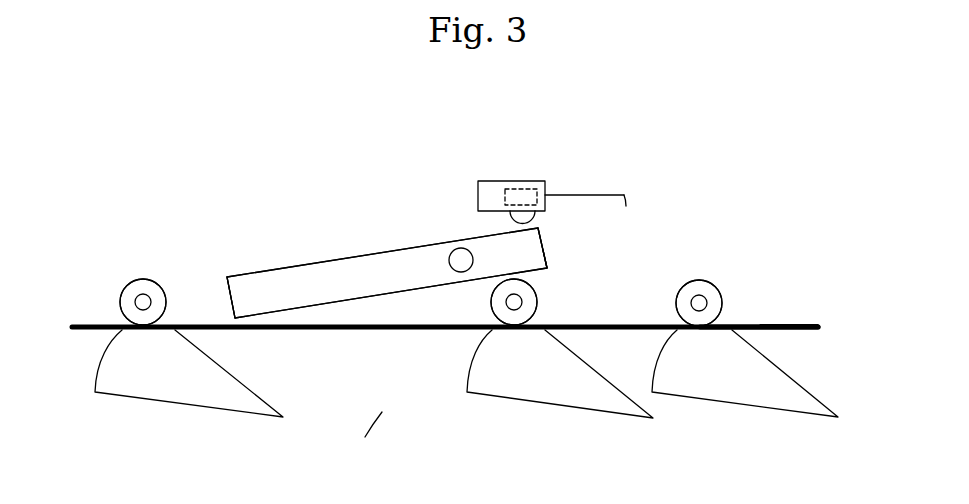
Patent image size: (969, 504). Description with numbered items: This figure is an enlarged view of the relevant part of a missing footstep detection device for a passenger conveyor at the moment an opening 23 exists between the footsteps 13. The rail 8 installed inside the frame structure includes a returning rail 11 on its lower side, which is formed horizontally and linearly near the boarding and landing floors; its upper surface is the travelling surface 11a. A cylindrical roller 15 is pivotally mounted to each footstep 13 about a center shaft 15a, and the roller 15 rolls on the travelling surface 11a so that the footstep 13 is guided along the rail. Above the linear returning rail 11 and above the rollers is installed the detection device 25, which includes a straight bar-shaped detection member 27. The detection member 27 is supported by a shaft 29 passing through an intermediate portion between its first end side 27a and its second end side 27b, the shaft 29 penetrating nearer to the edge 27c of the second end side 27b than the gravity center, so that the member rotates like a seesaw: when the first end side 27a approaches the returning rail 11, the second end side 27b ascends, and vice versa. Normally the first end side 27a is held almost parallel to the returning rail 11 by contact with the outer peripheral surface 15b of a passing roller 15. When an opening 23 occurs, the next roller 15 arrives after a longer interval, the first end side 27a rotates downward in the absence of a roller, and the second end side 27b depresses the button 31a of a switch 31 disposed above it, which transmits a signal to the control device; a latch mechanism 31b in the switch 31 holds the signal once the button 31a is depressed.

The rail 8 is at (745, 324).
The returning rail 11 is at (776, 324).
The travelling surface 11a is at (814, 324).
The footstep 13 is at (228, 406).
The roller 15 is at (130, 311).
The center shaft 15a is at (143, 302).
The outer peripheral surface 15b is at (120, 302).
The opening 23 is at (382, 412).
The detection device 25 is at (360, 196).
The detection member 27 is at (371, 258).
The first end side 27a is at (256, 277).
The second end side 27b is at (540, 250).
The edge 27c is at (549, 264).
The shaft 29 is at (458, 249).
The switch 31 is at (478, 193).
The button 31a is at (537, 217).
The latch mechanism 31b is at (527, 189).